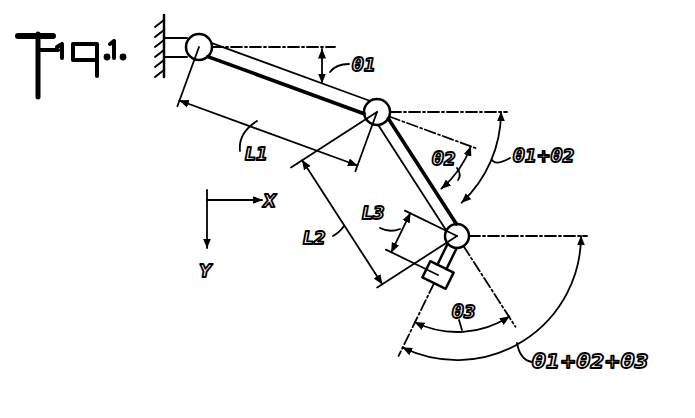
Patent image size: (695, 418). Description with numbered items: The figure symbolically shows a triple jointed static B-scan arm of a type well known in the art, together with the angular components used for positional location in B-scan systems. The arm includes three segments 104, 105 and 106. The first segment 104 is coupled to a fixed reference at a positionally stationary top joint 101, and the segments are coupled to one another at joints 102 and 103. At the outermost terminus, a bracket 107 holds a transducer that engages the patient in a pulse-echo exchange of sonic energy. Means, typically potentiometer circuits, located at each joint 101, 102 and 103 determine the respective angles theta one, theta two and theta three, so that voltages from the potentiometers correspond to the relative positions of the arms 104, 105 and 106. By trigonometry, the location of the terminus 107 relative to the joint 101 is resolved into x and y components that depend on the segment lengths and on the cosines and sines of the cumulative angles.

The top joint 101 is at (211, 38).
The joint 102 is at (387, 103).
The joint 103 is at (467, 229).
The segment 104 is at (281, 84).
The segment 105 is at (404, 167).
The segment 106 is at (468, 250).
The bracket 107 is at (426, 284).